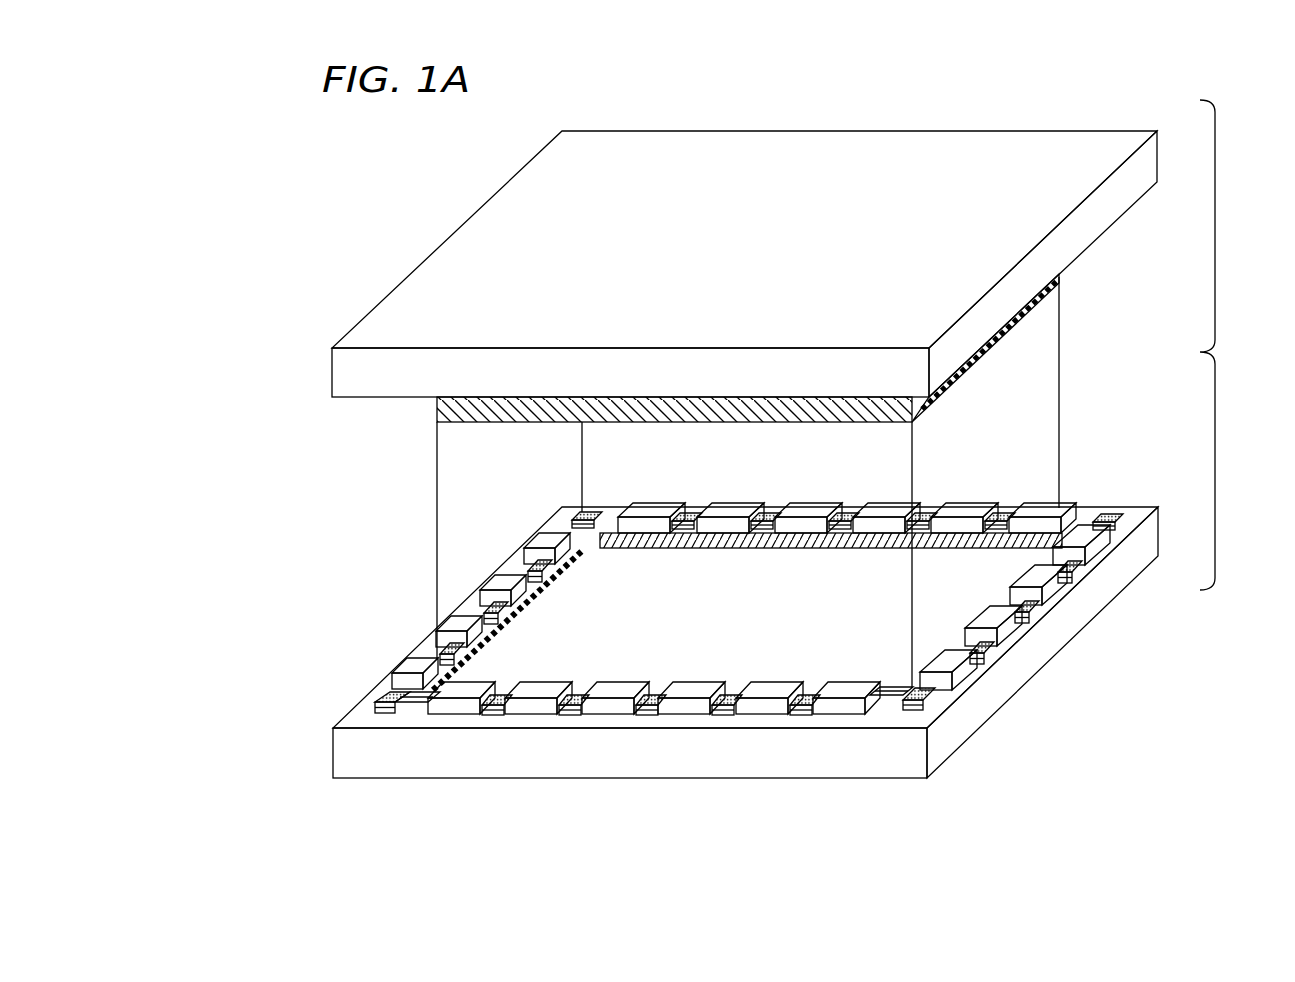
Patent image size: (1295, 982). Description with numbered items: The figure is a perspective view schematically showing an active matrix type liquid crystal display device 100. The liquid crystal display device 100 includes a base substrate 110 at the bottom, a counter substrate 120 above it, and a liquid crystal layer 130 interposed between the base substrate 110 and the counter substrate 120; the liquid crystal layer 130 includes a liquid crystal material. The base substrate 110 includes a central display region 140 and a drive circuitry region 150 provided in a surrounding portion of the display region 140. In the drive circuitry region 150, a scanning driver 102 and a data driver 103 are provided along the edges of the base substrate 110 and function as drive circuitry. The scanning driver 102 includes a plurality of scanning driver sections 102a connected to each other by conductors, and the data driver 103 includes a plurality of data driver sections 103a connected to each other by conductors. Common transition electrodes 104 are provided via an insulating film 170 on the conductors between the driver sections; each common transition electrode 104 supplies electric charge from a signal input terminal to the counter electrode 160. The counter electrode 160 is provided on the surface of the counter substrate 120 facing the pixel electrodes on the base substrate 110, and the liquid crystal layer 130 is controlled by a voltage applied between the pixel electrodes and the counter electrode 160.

The liquid crystal display device 100 is at (1242, 345).
The base substrate 110 is at (1003, 678).
The counter substrate 120 is at (1086, 162).
The liquid crystal layer 130 is at (1070, 330).
The display region 140 is at (933, 607).
The drive circuitry region 150 is at (365, 725).
The counter electrode 160 is at (978, 357).
The insulating film 170 is at (903, 712).
The scanning driver 102 is at (416, 580).
The scanning driver section 102a is at (543, 540).
The data driver 103 is at (637, 798).
The data driver section 103a is at (740, 848).
The common transition electrode 104 is at (937, 698).